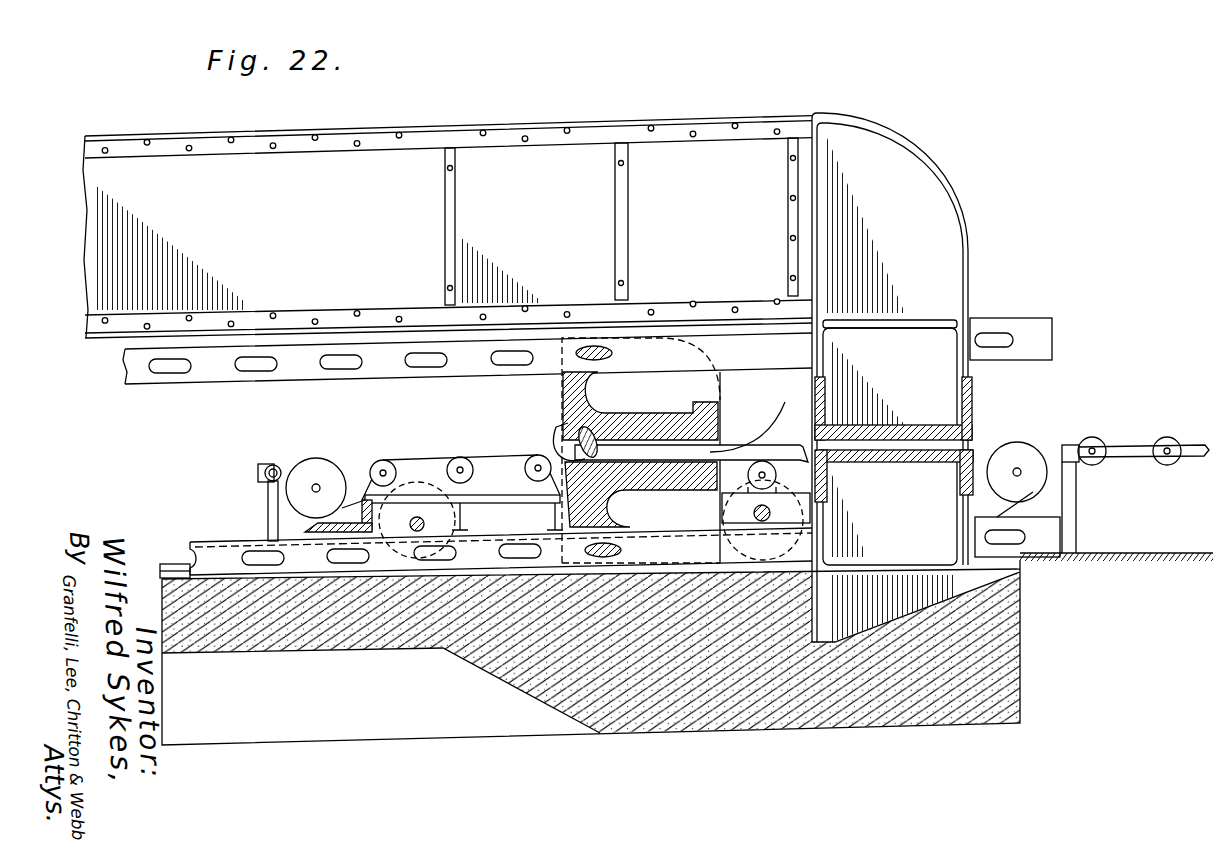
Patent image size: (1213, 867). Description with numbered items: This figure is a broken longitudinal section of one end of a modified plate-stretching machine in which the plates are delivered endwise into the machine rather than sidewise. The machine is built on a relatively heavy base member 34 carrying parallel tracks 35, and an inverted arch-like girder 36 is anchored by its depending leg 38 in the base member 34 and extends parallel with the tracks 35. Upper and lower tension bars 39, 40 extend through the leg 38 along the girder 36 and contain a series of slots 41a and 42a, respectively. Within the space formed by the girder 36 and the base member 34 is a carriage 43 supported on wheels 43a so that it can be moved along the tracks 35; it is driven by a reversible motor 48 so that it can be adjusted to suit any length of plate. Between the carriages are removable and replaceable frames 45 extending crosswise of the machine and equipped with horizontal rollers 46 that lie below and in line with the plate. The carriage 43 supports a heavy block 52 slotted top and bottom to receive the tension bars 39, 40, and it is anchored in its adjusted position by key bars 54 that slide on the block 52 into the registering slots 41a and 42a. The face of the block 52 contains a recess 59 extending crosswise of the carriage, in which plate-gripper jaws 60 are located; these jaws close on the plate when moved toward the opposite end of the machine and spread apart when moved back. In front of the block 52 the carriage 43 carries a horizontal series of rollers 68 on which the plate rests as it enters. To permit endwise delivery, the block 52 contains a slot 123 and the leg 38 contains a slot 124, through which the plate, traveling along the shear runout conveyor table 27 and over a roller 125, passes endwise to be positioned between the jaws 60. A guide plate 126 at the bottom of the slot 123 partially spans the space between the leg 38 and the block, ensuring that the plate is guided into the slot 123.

The shear runout conveyor table 27 is at (1128, 448).
The base member 34 is at (535, 683).
The tracks 35 is at (170, 565).
The inverted arch-like girder 36 is at (706, 129).
The leg 38 is at (967, 438).
The upper tension bar 39 is at (387, 373).
The lower tension bar 40 is at (210, 550).
The slots 41a is at (341, 371).
The slots 42a is at (262, 556).
The carriage 43 is at (724, 420).
The wheels 43a is at (818, 533).
The removable frames 45 is at (268, 500).
The horizontal rollers 46 is at (277, 469).
The reversible motor 48 is at (777, 476).
The block 52 is at (718, 430).
The bars 54 is at (576, 356).
The recess 59 is at (616, 411).
The plate-gripper jaws 60 is at (573, 430).
The rollers 68 is at (384, 461).
The slot 123 is at (764, 415).
The slot 124 is at (1025, 452).
The roller 125 is at (1080, 438).
The guide plate 126 is at (782, 448).